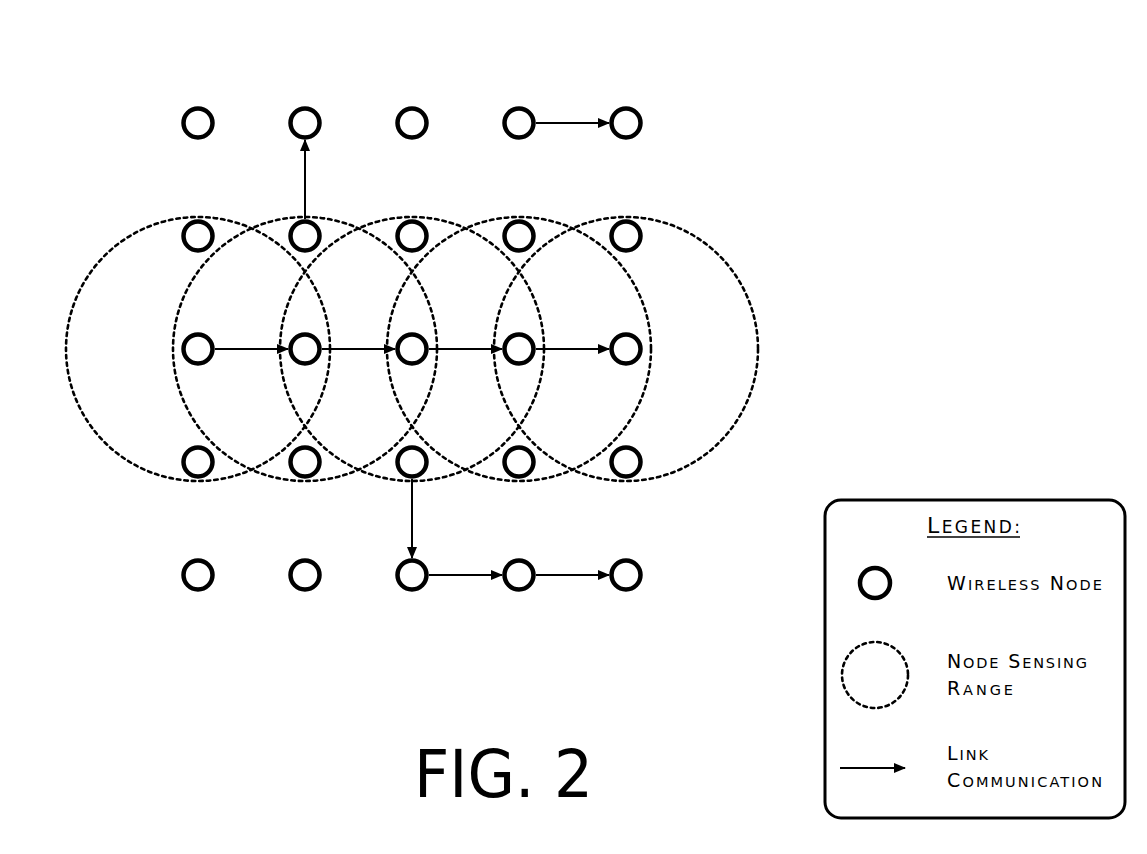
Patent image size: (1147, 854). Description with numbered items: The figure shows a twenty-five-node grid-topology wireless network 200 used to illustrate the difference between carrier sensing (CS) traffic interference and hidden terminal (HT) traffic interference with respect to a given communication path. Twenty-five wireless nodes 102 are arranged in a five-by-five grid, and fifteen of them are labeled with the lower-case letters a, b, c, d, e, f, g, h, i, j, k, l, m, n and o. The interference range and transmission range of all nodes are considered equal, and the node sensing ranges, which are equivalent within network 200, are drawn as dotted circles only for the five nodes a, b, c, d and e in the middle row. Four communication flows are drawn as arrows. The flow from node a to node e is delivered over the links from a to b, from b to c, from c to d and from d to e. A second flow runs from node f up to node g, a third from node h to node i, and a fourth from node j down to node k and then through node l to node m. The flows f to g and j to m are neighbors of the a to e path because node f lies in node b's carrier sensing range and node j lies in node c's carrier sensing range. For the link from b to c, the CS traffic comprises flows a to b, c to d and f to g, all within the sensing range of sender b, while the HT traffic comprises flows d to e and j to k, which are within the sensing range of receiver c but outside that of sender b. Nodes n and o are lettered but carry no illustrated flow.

The wireless node 102 is at (182, 450).
The grid-topology network 200 is at (843, 80).
The node a is at (198, 349).
The node b is at (305, 349).
The node c is at (412, 349).
The node d is at (519, 349).
The node e is at (626, 349).
The node f is at (305, 236).
The node g is at (305, 123).
The node h is at (519, 123).
The node i is at (626, 123).
The node j is at (412, 462).
The node k is at (412, 575).
The node l is at (519, 575).
The node m is at (626, 575).
The node n is at (305, 462).
The node o is at (412, 236).